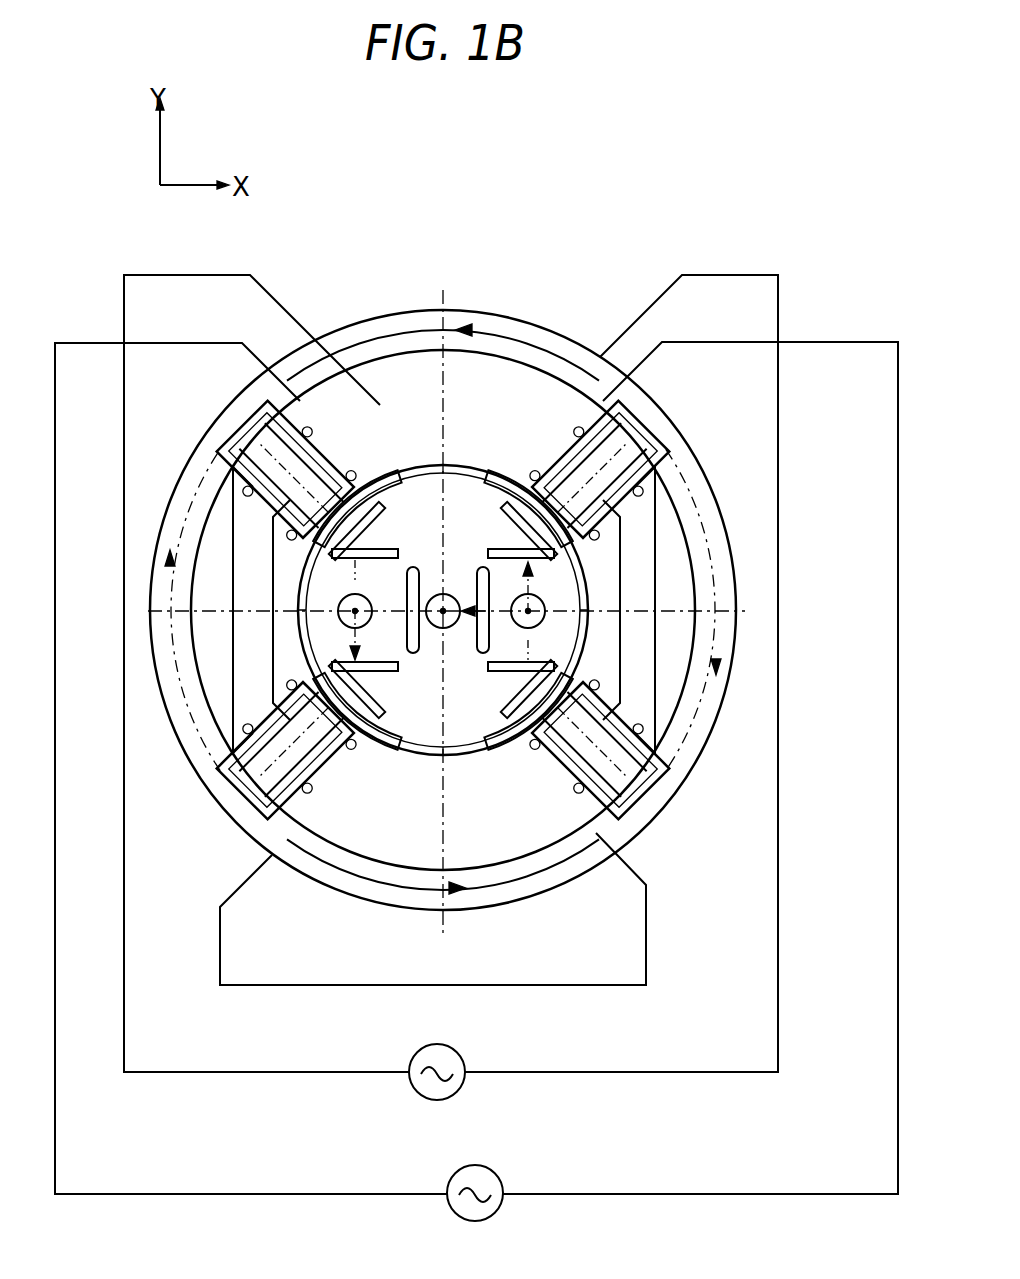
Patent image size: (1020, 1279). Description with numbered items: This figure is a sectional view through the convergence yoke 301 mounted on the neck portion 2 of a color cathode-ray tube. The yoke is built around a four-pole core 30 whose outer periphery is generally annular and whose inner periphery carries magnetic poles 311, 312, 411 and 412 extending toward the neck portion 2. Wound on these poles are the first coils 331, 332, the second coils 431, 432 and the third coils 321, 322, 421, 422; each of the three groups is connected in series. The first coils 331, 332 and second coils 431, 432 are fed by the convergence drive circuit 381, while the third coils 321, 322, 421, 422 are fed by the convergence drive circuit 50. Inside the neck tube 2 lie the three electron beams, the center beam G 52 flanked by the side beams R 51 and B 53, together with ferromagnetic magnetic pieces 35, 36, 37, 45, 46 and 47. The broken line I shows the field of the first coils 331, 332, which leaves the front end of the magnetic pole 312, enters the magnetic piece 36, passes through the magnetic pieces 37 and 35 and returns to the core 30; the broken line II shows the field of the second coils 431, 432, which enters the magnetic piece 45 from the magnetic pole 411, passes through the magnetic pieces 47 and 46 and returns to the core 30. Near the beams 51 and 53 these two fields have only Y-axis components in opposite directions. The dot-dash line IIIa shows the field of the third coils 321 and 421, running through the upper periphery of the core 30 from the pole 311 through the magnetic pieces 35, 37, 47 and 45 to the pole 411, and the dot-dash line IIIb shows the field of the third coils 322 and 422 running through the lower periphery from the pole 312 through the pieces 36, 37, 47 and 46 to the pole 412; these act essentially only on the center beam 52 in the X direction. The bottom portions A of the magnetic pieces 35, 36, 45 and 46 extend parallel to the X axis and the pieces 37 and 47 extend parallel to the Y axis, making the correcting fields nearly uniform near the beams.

The neck portion 2 is at (465, 760).
The four-pole core 30 is at (392, 312).
The convergence yoke 301 is at (575, 295).
The magnetic pole 311 is at (560, 400).
The magnetic pole 312 is at (540, 750).
The third coil 321 is at (650, 455).
The third coil 322 is at (635, 800).
The first coil 331 is at (620, 420).
The first coil 332 is at (650, 780).
The magnetic pole 411 is at (300, 465).
The magnetic pole 412 is at (320, 760).
The third coil 421 is at (272, 490).
The third coil 422 is at (265, 800).
The second coil 431 is at (290, 405).
The second coil 432 is at (250, 770).
The magnetic piece 35 is at (510, 480).
The magnetic piece 36 is at (510, 725).
The magnetic piece 45 is at (394, 490).
The magnetic piece 46 is at (375, 725).
The magnetic piece 37 is at (483, 568).
The magnetic piece 47 is at (413, 568).
The electron beam R 51 is at (546, 611).
The electron beam G 52 is at (443, 598).
The electron beam B 53 is at (340, 611).
The convergence drive circuit 50 is at (455, 1046).
The convergence drive circuit 381 is at (504, 1186).
The bottom portion A is at (505, 545).
The magnetic field I is at (735, 505).
The magnetic field II is at (160, 508).
The magnetic field IIIa is at (512, 328).
The magnetic field IIIb is at (360, 892).